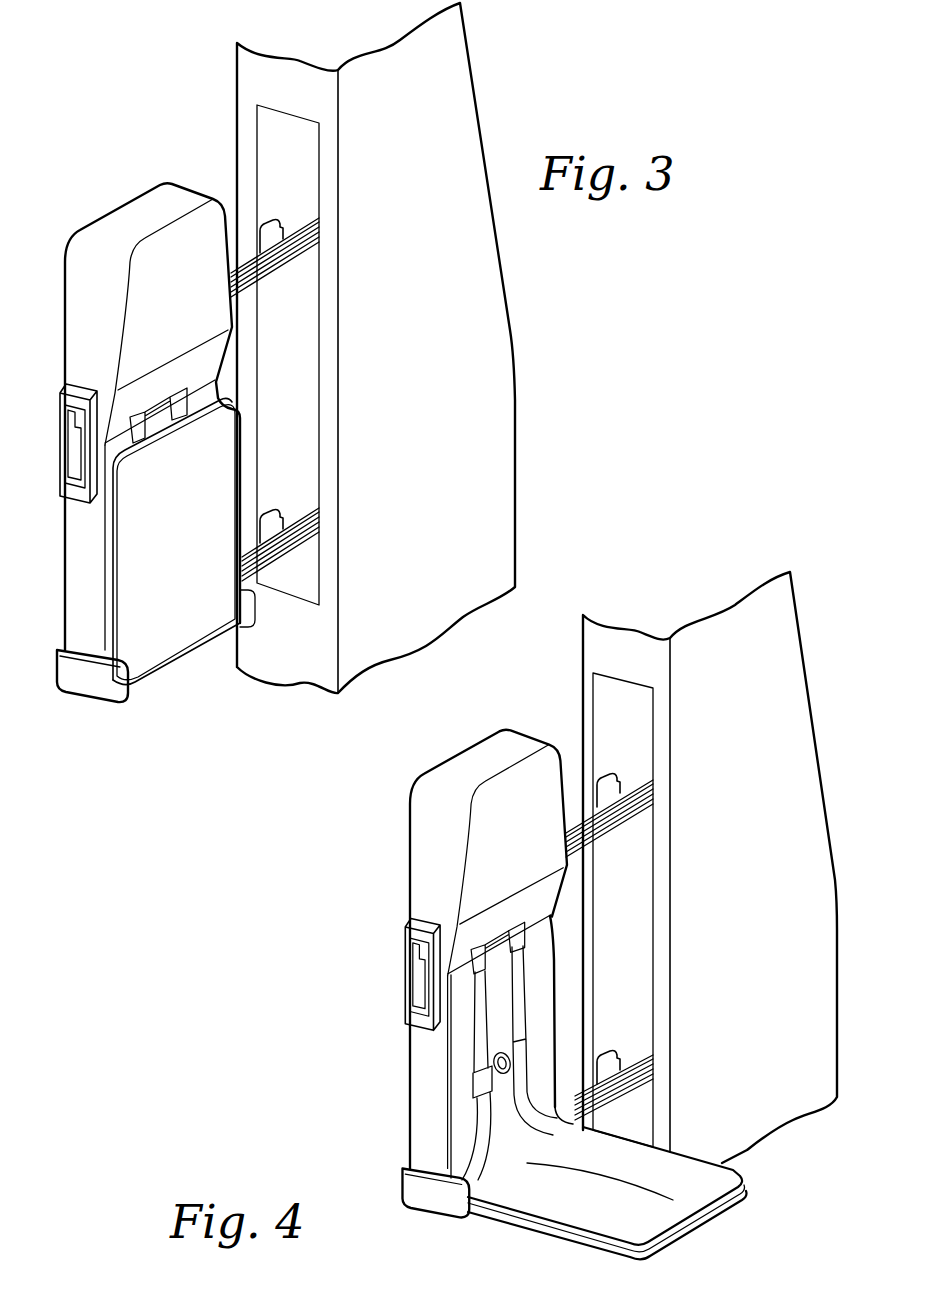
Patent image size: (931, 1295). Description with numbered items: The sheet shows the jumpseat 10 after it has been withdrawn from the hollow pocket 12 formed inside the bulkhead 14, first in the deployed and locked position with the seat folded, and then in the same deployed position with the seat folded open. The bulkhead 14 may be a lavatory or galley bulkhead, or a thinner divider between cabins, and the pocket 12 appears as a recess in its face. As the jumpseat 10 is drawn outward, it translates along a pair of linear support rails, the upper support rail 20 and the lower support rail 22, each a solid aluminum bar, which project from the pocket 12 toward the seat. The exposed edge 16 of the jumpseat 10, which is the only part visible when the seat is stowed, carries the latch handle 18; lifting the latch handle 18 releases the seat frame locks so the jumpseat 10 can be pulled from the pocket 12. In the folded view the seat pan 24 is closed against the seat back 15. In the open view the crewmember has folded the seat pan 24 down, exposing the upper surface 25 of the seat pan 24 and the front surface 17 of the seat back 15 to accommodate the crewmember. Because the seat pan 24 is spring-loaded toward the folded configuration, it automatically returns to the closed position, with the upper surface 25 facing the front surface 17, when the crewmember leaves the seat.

In FIG. 3, the jumpseat 10 is at (133, 210).
In FIG. 4, the jumpseat 10 is at (425, 875).
In FIG. 3, the hollow pocket 12 is at (268, 134).
In FIG. 4, the hollow pocket 12 is at (610, 693).
In FIG. 4, the bulkhead 14 is at (790, 613).
In FIG. 4, the seat back 15 is at (428, 1138).
In FIG. 3, the exposed edge 16 is at (80, 563).
In FIG. 4, the exposed edge 16 is at (420, 1092).
In FIG. 4, the front surface 17 is at (457, 1120).
In FIG. 3, the latch handle 18 is at (70, 430).
In FIG. 4, the latch handle 18 is at (418, 978).
In FIG. 3, the upper support rail 20 is at (280, 263).
In FIG. 4, the upper support rail 20 is at (633, 797).
In FIG. 3, the lower support rail 22 is at (300, 523).
In FIG. 4, the lower support rail 22 is at (633, 1073).
In FIG. 4, the seat pan 24 is at (560, 1200).
In FIG. 4, the upper surface 25 is at (682, 1167).